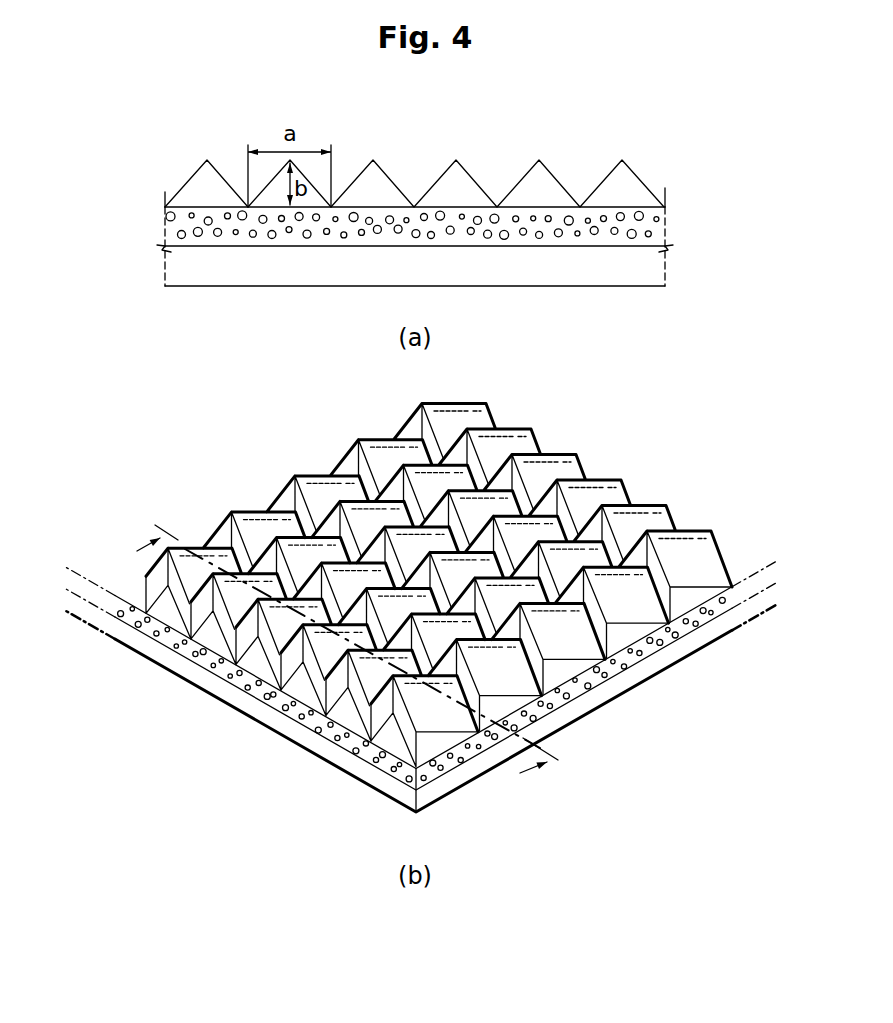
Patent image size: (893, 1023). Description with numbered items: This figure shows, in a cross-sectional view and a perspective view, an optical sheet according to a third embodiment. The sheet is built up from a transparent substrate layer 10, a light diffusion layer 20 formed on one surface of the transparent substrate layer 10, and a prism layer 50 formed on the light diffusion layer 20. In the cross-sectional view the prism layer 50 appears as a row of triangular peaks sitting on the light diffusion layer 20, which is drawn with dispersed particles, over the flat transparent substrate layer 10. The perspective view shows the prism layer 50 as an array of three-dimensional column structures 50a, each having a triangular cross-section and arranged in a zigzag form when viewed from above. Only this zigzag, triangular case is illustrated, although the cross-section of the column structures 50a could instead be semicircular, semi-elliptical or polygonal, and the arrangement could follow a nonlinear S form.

The transparent substrate layer 10 is at (663, 271).
The light diffusion layer 20 is at (663, 228).
The prism layer 50 is at (668, 187).
The 3D column structures 50a is at (634, 172).